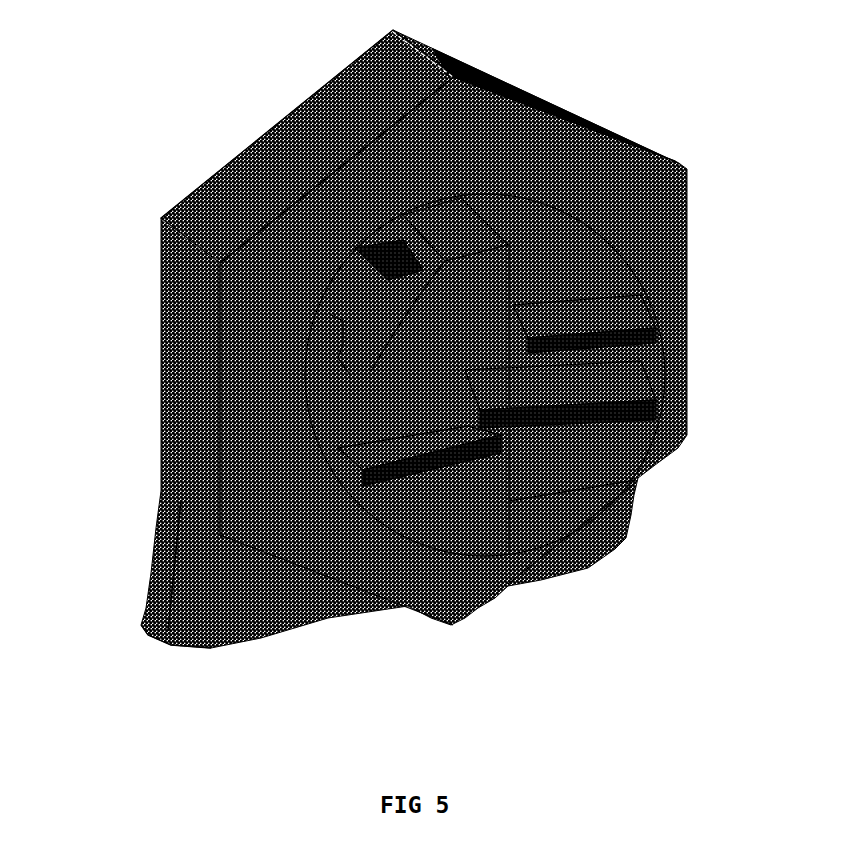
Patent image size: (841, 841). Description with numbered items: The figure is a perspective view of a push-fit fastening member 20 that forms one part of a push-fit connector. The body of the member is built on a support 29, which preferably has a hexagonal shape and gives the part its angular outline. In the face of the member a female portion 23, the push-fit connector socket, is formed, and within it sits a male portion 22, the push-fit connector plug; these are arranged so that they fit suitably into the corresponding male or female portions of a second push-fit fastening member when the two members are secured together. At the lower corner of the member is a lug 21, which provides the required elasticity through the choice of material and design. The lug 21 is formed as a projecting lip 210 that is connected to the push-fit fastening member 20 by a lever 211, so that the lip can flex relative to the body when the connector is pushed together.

The push-fit fastening member 20 is at (642, 633).
The support 29 is at (280, 147).
The female portion 23 is at (328, 377).
The male portion 22 is at (600, 362).
The lug 21 is at (195, 668).
The lever 211 is at (143, 548).
The projecting lip 210 is at (137, 617).